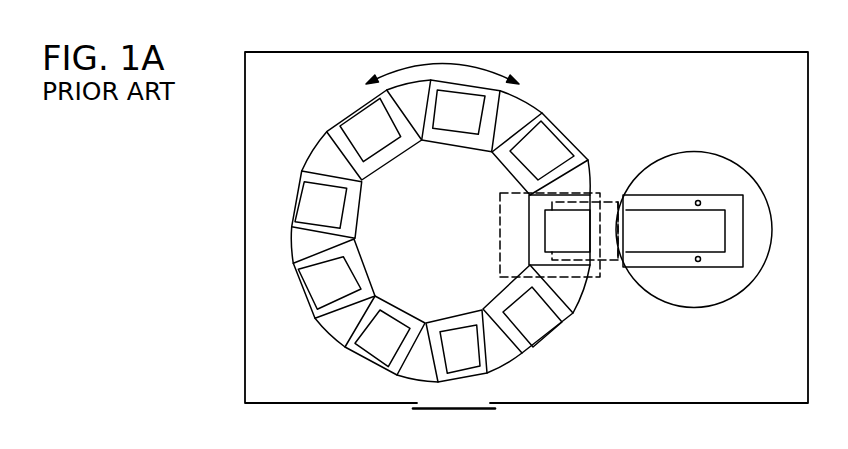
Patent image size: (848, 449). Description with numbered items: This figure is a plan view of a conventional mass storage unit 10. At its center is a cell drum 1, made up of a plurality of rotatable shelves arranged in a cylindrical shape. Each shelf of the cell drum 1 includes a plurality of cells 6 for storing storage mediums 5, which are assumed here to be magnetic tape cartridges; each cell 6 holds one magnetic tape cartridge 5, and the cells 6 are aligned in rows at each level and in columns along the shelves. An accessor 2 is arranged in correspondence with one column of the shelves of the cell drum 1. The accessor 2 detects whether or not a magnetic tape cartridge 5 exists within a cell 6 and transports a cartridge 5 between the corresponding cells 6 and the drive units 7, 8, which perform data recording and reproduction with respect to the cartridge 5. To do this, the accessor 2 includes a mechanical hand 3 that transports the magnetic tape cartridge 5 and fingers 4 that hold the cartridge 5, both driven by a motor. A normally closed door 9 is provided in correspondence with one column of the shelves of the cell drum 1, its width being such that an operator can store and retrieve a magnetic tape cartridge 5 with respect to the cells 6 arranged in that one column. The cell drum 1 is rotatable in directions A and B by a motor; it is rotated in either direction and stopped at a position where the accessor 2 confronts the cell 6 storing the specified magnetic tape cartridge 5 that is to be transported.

The cell drum 1 is at (471, 224).
The accessor 2 is at (725, 157).
The mechanical hand 3 is at (745, 215).
The fingers 4 is at (615, 265).
The storage medium 5 is at (572, 198).
The cell 6 is at (541, 113).
The drive unit 7 is at (575, 193).
The drive unit 8 is at (592, 197).
The door 9 is at (453, 410).
The mass storage unit 10 is at (737, 52).